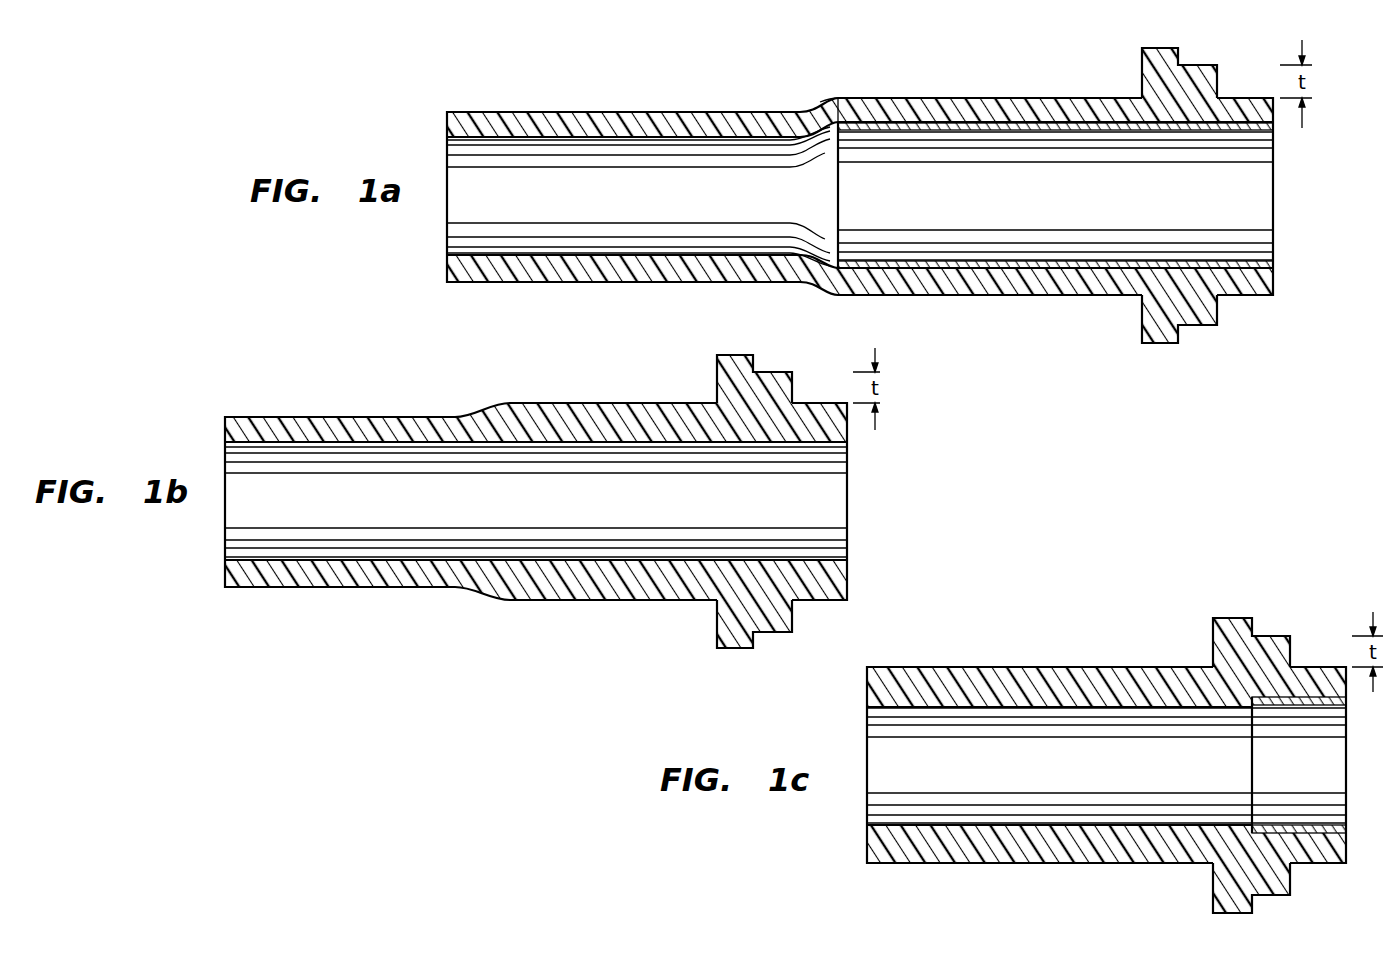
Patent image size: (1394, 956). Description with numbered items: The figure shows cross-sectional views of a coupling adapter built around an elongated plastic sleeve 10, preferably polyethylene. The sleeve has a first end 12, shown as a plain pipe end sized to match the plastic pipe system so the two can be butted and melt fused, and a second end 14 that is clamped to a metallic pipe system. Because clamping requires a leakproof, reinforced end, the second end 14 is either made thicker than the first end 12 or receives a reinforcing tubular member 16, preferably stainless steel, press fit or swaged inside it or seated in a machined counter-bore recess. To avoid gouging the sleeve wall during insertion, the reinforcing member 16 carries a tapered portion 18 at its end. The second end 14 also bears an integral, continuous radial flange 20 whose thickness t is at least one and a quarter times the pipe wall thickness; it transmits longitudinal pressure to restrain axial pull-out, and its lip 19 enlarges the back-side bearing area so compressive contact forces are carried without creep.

In FIG. 1a, the elongated plastic sleeve 10 is at (625, 206).
In FIG. 1b, the elongated plastic sleeve 10 is at (318, 511).
In FIG. 1c, the elongated plastic sleeve 10 is at (1002, 778).
In FIG. 1a, the first end 12 is at (658, 111).
In FIG. 1a, the second end 14 is at (983, 97).
In FIG. 1b, the second end 14 is at (593, 402).
In FIG. 1c, the second end 14 is at (1093, 865).
In FIG. 1a, the reinforcing tubular member 16 is at (1090, 208).
In FIG. 1c, the reinforcing tubular member 16 is at (1282, 778).
In FIG. 1a, the tapered portion 18 is at (843, 113).
In FIG. 1a, the lip 19 is at (1180, 47).
In FIG. 1b, the lip 19 is at (747, 353).
In FIG. 1c, the lip 19 is at (1240, 615).
In FIG. 1a, the flange 20 is at (1142, 310).
In FIG. 1b, the flange 20 is at (715, 620).
In FIG. 1c, the flange 20 is at (1213, 642).